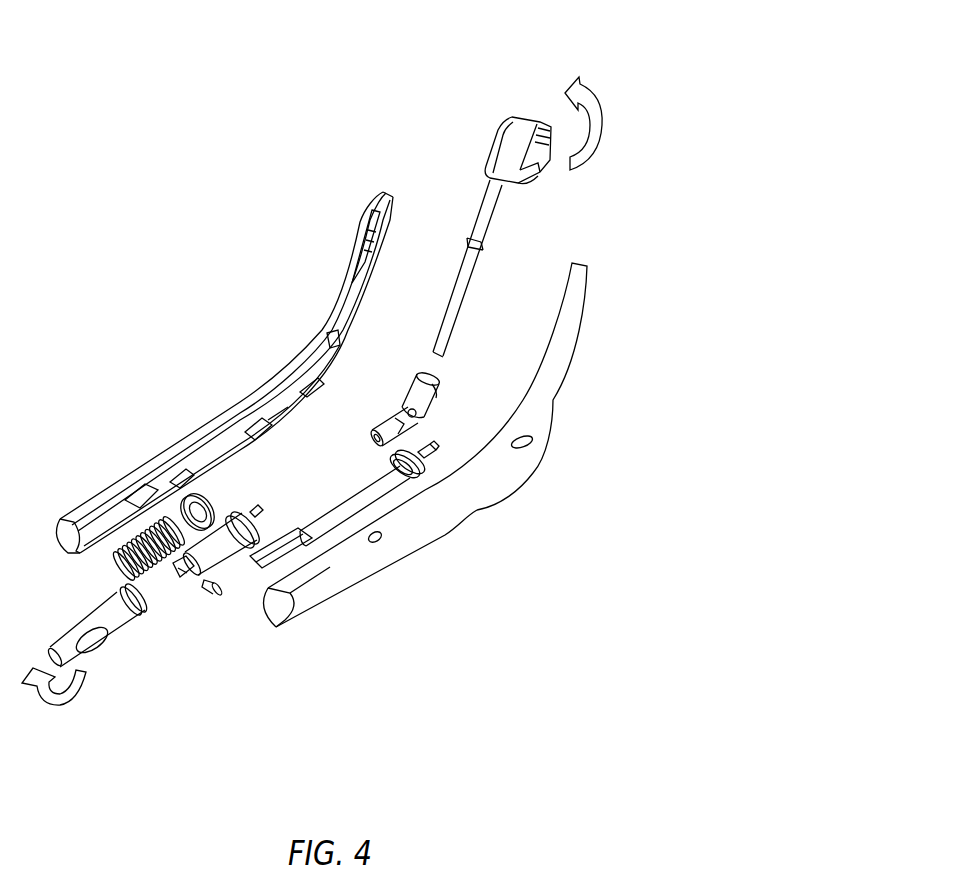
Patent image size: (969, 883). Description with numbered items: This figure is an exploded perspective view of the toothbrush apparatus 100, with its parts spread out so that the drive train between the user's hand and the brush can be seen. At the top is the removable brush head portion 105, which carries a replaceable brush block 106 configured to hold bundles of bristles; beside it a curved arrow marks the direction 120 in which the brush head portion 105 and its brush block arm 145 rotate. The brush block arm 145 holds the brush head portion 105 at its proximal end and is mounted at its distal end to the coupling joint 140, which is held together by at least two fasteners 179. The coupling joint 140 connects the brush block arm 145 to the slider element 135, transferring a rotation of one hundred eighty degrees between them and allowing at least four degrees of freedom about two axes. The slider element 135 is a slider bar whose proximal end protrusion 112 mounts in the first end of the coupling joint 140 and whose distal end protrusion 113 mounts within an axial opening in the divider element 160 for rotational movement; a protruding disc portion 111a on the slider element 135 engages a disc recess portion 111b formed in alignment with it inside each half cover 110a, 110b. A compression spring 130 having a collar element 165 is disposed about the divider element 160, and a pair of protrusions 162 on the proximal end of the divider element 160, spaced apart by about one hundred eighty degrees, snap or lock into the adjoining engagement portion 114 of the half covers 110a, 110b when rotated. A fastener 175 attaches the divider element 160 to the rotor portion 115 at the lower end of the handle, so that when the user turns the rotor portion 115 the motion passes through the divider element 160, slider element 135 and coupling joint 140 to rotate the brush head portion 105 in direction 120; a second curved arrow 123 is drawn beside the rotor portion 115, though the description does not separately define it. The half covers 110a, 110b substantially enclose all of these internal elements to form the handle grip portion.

The toothbrush apparatus 100 is at (74, 268).
The removable brush head portion 105 is at (496, 138).
The brush block 106 is at (540, 176).
The half cover 110a is at (575, 328).
The half cover 110b is at (335, 306).
The protruding disc portion 111a is at (440, 503).
The disc recess portion 111b is at (277, 413).
The proximal end protrusion 112 is at (430, 444).
The distal end protrusion 113 is at (305, 567).
The engagement portion 114 is at (115, 512).
The rotor portion 115 is at (120, 633).
The direction of rotation 120 is at (595, 90).
The rotation direction arrow 123 is at (48, 702).
The compression spring 130 is at (117, 560).
The slider element 135 is at (333, 527).
The coupling joint 140 is at (390, 384).
The brush block arm 145 is at (470, 280).
The divider element 160 is at (223, 561).
The pair of protrusions 162 is at (257, 505).
The collar element 165 is at (215, 505).
The fastener 175 is at (207, 590).
The fasteners 179 is at (440, 382).